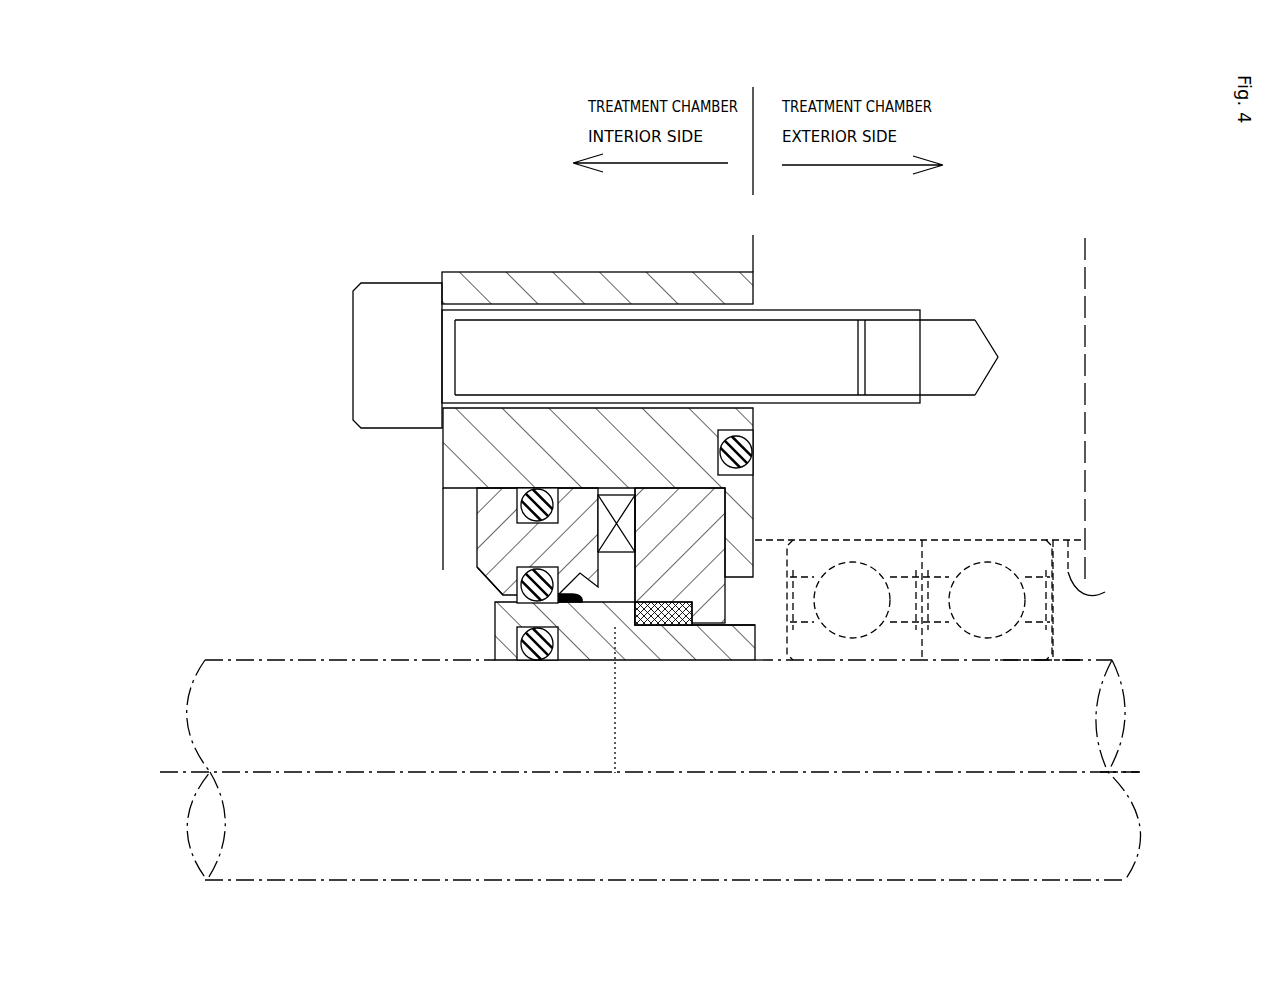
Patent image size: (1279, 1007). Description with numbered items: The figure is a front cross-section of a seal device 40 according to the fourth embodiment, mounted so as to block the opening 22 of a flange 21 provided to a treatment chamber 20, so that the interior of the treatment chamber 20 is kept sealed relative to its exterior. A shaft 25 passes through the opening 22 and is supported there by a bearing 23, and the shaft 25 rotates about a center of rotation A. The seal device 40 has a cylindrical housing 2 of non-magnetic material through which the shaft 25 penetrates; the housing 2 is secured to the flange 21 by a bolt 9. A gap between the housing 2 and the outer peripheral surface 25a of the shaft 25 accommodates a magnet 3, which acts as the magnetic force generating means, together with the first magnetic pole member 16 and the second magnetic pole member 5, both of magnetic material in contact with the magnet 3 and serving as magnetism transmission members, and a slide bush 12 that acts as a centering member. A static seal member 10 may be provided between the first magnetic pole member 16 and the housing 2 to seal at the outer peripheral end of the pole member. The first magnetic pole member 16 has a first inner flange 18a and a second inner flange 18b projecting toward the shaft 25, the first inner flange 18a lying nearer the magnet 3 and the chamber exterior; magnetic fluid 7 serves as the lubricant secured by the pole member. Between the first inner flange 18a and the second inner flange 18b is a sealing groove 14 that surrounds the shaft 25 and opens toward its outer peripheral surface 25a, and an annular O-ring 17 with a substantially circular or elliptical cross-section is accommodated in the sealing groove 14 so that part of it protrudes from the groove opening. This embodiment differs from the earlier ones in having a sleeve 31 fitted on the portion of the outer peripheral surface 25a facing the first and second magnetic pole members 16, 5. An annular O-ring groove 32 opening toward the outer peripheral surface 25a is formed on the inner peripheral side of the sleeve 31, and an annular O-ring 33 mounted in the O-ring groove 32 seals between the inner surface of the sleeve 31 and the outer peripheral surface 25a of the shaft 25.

The seal device 40 is at (467, 150).
The housing 2 is at (472, 284).
The magnet 3 is at (640, 490).
The second magnetic pole member 5 is at (713, 545).
The magnetic fluid 7 is at (592, 660).
The bolt 9 is at (373, 332).
The static seal member 10 is at (556, 490).
The slide bush 12 is at (690, 660).
The sealing groove 14 is at (528, 598).
The first magnetic pole member 16 is at (493, 533).
The O-ring 17 is at (547, 600).
The first inner flange 18a is at (626, 723).
The second inner flange 18b is at (496, 590).
The treatment chamber 20 is at (280, 448).
The flange 21 is at (1063, 352).
The opening 22 is at (1105, 592).
The bearing 23 is at (1028, 570).
The shaft 25 is at (1015, 728).
The outer peripheral surface 25a is at (1085, 658).
The sleeve 31 is at (650, 652).
The O-ring groove 32 is at (528, 657).
The O-ring 33 is at (540, 658).
The center of rotation A is at (1132, 773).